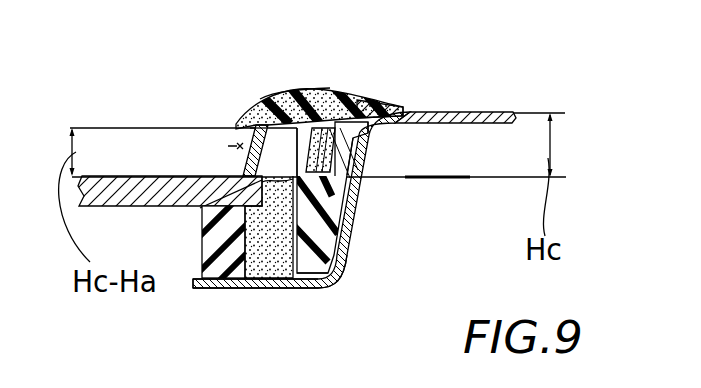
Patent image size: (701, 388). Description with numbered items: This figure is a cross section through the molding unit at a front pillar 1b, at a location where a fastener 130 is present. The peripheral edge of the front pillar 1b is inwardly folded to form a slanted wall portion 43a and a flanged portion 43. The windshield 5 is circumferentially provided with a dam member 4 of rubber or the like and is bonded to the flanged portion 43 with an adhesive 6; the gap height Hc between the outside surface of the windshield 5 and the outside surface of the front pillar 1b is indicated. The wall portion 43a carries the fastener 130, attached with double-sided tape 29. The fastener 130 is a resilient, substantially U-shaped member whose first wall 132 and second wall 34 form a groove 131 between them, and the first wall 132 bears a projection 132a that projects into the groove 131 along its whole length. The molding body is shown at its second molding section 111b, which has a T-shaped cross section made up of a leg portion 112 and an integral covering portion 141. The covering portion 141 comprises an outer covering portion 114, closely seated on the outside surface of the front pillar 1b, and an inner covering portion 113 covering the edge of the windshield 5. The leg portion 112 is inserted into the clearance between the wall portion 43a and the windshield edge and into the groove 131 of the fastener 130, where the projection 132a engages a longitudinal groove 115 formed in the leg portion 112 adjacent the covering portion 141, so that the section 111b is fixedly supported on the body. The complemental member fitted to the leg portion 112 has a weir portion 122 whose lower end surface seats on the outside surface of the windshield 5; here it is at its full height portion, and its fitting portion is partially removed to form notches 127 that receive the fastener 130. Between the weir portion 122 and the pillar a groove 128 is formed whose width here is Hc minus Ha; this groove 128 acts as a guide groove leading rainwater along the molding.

The front pillar 1b is at (479, 113).
The dam member 4 is at (202, 236).
The windshield 5 is at (111, 198).
The adhesive 6 is at (261, 274).
The double-sided tape 29 is at (366, 188).
The second wall 34 is at (200, 208).
The flanged portion 43 is at (220, 286).
The slanted wall portion 43a is at (351, 247).
The second molding section 111b is at (330, 70).
The leg portion 112 is at (338, 212).
The inner covering portion 113 is at (272, 96).
The outer covering portion 114 is at (388, 112).
The groove 115 is at (343, 114).
The weir portion 122 is at (250, 129).
The notches 127 is at (292, 129).
The groove 128 is at (237, 146).
The fastener 130 is at (307, 273).
The groove 131 is at (457, 178).
The first wall 132 is at (362, 171).
The projection 132a is at (370, 134).
The covering portion 141 is at (301, 88).